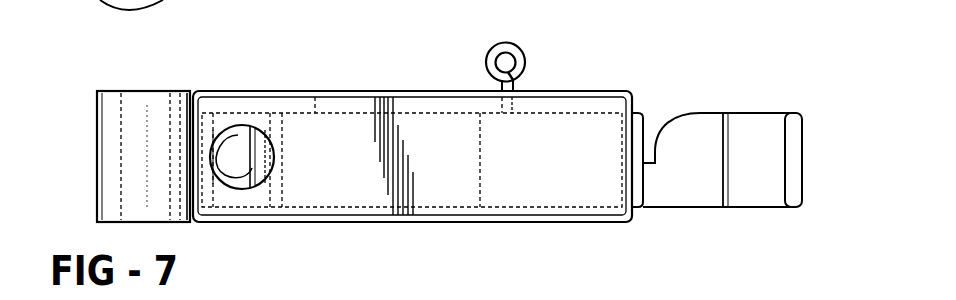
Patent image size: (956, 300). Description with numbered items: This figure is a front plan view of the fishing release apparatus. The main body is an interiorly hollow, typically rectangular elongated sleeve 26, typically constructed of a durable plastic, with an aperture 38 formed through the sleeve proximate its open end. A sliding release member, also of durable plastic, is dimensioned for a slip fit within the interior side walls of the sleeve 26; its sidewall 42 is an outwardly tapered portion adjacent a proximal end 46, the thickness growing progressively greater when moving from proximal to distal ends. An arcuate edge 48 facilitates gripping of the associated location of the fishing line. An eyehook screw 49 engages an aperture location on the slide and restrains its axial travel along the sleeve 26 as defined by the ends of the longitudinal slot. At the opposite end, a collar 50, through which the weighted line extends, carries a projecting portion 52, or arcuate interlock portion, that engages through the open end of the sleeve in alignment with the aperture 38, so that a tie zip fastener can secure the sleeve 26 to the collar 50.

The sleeve 26 is at (414, 97).
The aperture 38 is at (234, 132).
The sidewall 42 is at (708, 136).
The proximal end 46 is at (802, 163).
The arcuate edge 48 is at (690, 114).
The eyehook screw 49 is at (516, 46).
The collar 50 is at (112, 157).
The projecting portion 52 is at (237, 163).